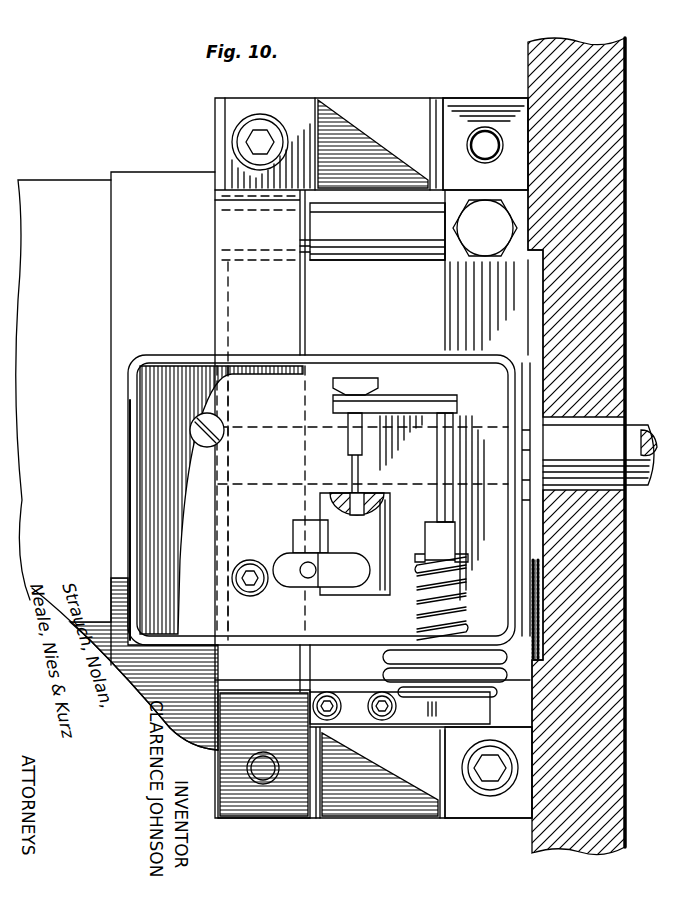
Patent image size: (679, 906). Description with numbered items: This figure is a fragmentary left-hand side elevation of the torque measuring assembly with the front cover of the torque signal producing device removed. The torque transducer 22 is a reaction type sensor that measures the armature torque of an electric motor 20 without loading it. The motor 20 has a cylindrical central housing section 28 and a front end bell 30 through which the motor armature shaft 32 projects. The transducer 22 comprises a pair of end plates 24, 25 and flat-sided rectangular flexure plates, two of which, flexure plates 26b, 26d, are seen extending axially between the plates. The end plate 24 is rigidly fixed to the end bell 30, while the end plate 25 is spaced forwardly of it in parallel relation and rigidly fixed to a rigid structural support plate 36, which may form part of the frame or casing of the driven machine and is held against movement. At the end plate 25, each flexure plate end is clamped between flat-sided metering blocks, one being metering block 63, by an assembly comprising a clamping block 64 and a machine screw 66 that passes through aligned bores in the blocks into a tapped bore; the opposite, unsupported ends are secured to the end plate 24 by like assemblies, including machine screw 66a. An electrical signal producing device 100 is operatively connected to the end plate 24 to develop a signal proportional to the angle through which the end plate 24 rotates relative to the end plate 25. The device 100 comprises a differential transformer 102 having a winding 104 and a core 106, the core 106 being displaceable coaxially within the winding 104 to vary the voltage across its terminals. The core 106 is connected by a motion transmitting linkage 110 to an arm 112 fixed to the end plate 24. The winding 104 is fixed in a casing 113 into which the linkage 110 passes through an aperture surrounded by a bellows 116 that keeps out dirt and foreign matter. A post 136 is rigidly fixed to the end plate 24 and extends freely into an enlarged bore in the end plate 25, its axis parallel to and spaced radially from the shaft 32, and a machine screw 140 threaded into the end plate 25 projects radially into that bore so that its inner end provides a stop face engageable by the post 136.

The electric motor 20 is at (184, 160).
The torque transducer 22 is at (412, 96).
The end plate 24 is at (232, 820).
The end plate 25 is at (488, 98).
The flexure plate 26b is at (344, 98).
The flexure plate 26d is at (358, 820).
The cylindrical central housing section 28 is at (68, 182).
The front end bell 30 is at (137, 174).
The motor armature shaft 32 is at (638, 425).
The rigid structural support plate 36 is at (625, 92).
The metering block 63 is at (441, 745).
The clamping block 64 is at (458, 805).
The machine screw 66 is at (496, 160).
The machine screw 66a is at (262, 114).
The electrical signal producing device 100 is at (358, 350).
The differential transformer 102 is at (310, 511).
The winding 104 is at (322, 590).
The core 106 is at (338, 500).
The motion transmitting linkage 110 is at (410, 393).
The arm 112 is at (445, 718).
The casing 113 is at (155, 352).
The bellows 116 is at (459, 619).
The post 136 is at (333, 262).
The machine screw 140 is at (445, 226).